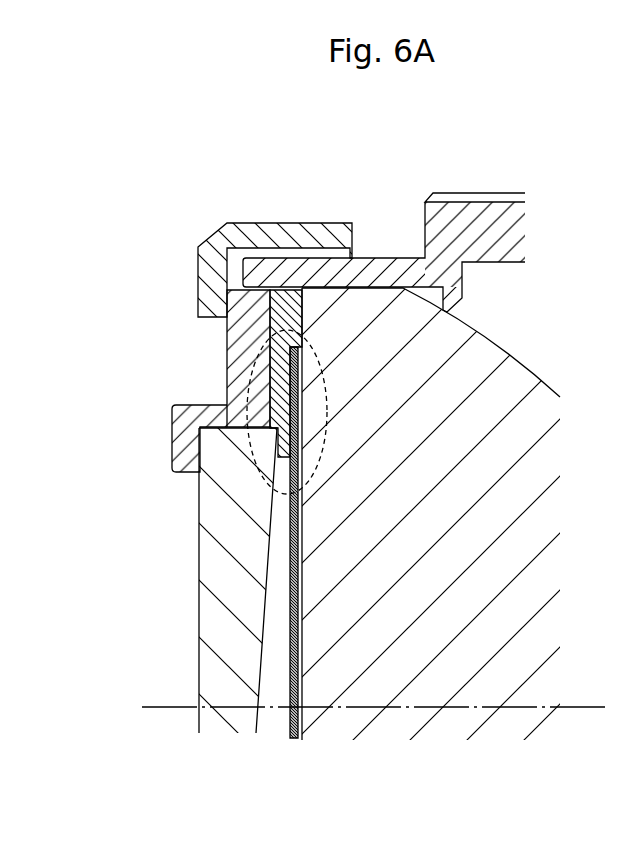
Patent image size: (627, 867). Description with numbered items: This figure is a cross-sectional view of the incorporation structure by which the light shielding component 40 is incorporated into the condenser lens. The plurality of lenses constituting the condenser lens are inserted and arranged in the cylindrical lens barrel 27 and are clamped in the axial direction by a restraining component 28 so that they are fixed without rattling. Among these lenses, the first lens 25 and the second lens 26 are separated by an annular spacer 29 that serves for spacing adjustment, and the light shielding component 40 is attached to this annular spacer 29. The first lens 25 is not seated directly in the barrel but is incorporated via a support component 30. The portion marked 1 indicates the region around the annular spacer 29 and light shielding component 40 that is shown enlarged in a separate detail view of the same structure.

The bearing device / sealing portion 1 is at (222, 402).
The first lens 25 is at (199, 607).
The second lens 26 is at (517, 350).
The lens barrel 27 is at (483, 210).
The restraining component 28 is at (283, 222).
The annular spacer 29 is at (257, 377).
The support component 30 is at (227, 345).
The light shielding component 40 is at (287, 535).